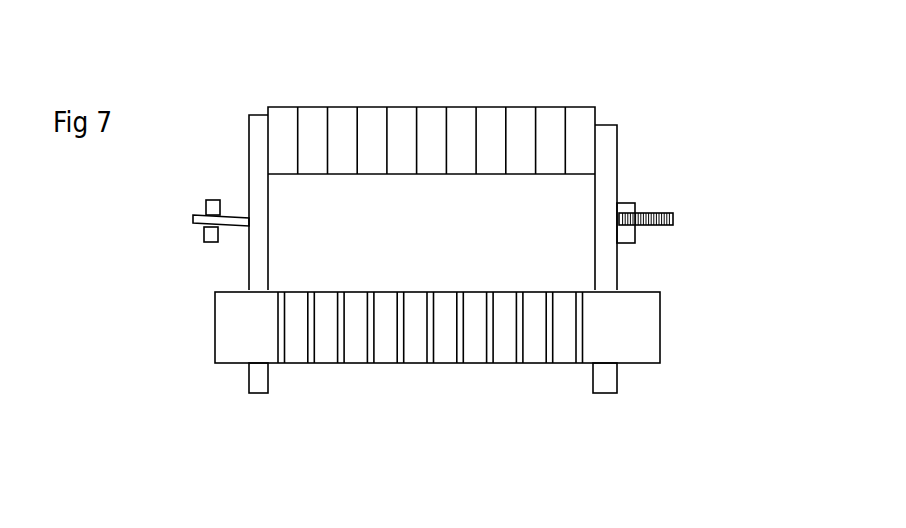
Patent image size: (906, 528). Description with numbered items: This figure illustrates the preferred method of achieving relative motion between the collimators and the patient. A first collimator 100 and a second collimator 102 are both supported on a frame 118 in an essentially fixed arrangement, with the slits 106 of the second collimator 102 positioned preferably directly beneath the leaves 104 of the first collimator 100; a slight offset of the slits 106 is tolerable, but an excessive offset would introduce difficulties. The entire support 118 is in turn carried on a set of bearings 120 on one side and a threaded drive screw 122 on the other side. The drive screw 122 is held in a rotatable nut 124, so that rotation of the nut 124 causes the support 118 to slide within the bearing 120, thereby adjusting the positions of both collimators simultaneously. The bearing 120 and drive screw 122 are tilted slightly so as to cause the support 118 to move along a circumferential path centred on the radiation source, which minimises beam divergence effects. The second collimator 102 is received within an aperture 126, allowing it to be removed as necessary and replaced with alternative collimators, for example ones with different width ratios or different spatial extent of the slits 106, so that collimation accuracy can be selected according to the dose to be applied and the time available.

The first collimator 100 is at (597, 108).
The second collimator 102 is at (653, 347).
The leaves 104 is at (460, 125).
The slits 106 is at (459, 363).
The frame 118 is at (619, 165).
The bearings 120 is at (193, 219).
The threaded drive screw 122 is at (674, 219).
The rotatable nut 124 is at (636, 246).
The aperture 126 is at (622, 367).